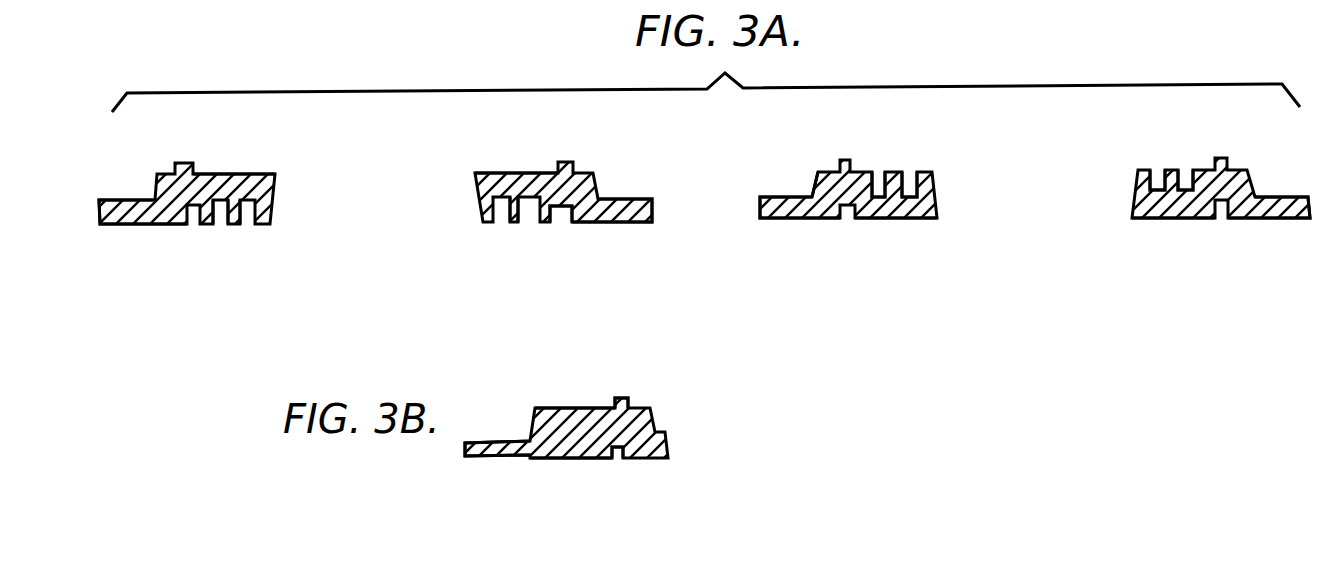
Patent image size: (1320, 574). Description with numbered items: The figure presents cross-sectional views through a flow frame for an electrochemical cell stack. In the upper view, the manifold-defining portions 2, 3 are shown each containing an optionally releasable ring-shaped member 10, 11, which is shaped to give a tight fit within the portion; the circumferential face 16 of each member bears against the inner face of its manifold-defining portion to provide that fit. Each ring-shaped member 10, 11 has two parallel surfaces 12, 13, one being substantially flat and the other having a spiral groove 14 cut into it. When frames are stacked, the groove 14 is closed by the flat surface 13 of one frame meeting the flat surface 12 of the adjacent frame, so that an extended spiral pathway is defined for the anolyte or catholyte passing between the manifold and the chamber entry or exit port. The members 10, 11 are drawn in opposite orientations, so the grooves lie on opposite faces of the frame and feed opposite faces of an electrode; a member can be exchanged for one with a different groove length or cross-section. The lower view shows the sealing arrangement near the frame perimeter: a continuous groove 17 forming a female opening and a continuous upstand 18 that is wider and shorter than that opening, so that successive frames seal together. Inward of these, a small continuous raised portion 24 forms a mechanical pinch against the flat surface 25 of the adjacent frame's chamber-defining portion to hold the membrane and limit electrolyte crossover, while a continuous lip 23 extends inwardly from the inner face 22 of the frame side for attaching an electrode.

In FIG. 3A, the manifold-defining portion 2 is at (120, 226).
In FIG. 3A, the manifold-defining portion 3 is at (775, 222).
In FIG. 3A, the ring-shaped member 10 is at (275, 186).
In FIG. 3A, the ring-shaped member 11 is at (930, 198).
In FIG. 3A, the flat surface 12 is at (237, 224).
In FIG. 3A, the flat surface 13 is at (228, 173).
In FIG. 3A, the spiral groove 14 is at (218, 220).
In FIG. 3A, the circumferential face 16 is at (560, 190).
In FIG. 3B, the continuous groove 17 is at (620, 458).
In FIG. 3B, the continuous upstand 18 is at (622, 398).
In FIG. 3B, the inner face 22 is at (530, 427).
In FIG. 3B, the continuous lip 23 is at (485, 452).
In FIG. 3B, the raised portion 24 is at (555, 408).
In FIG. 3B, the flat surface 25 is at (563, 458).